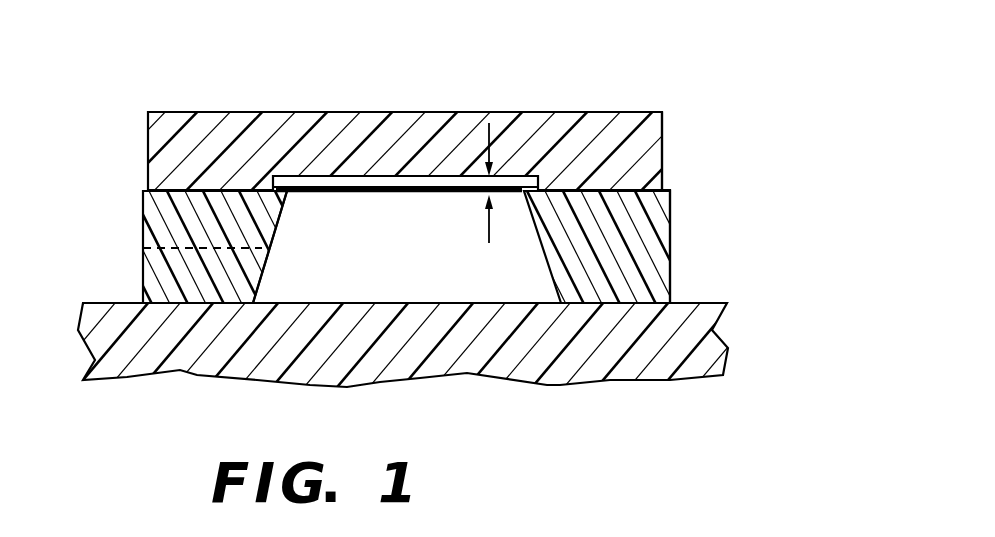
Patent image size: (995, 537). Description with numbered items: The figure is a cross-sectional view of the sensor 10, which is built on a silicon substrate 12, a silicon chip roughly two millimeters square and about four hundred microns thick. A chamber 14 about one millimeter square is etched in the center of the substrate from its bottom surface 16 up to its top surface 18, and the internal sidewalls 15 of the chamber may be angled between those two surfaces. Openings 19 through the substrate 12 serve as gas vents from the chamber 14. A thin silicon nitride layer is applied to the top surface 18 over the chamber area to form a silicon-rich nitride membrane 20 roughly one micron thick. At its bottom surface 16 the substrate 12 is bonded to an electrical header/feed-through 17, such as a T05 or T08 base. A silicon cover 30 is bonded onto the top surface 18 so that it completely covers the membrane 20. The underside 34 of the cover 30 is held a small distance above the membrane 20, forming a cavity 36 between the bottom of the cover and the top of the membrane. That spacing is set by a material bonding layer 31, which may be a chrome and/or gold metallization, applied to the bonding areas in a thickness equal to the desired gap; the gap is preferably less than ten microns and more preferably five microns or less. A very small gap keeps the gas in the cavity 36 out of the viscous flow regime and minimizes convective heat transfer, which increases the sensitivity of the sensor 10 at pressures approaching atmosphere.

The sensor 10 is at (212, 72).
The silicon substrate 12 is at (648, 275).
The chamber 14 is at (411, 283).
The internal sidewalls 15 is at (260, 280).
The bottom surface 16 is at (584, 302).
The electrical header/feed-through 17 is at (670, 325).
The top surface 18 is at (640, 187).
The openings 19 is at (143, 246).
The silicon-rich nitride membrane 20 is at (393, 192).
The silicon cover 30 is at (417, 120).
The material bonding layer 31 is at (198, 190).
The underside of cover 34 is at (380, 178).
The cavity 36 is at (369, 178).